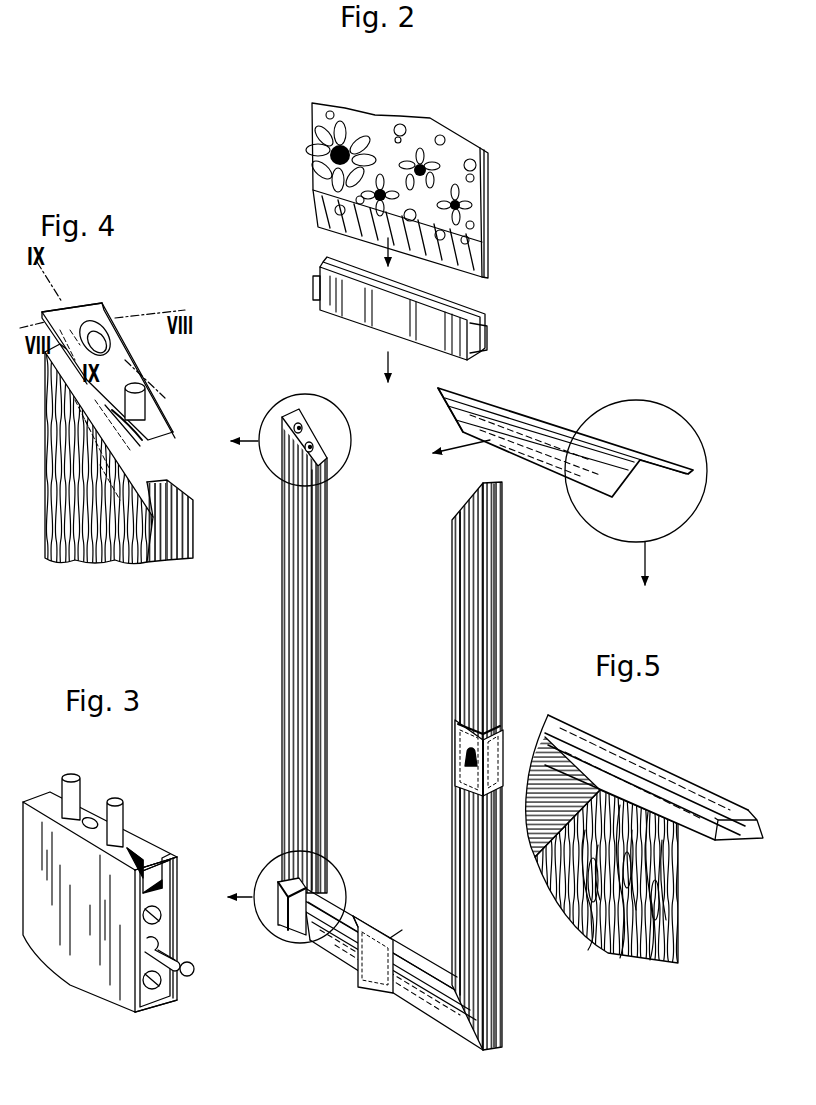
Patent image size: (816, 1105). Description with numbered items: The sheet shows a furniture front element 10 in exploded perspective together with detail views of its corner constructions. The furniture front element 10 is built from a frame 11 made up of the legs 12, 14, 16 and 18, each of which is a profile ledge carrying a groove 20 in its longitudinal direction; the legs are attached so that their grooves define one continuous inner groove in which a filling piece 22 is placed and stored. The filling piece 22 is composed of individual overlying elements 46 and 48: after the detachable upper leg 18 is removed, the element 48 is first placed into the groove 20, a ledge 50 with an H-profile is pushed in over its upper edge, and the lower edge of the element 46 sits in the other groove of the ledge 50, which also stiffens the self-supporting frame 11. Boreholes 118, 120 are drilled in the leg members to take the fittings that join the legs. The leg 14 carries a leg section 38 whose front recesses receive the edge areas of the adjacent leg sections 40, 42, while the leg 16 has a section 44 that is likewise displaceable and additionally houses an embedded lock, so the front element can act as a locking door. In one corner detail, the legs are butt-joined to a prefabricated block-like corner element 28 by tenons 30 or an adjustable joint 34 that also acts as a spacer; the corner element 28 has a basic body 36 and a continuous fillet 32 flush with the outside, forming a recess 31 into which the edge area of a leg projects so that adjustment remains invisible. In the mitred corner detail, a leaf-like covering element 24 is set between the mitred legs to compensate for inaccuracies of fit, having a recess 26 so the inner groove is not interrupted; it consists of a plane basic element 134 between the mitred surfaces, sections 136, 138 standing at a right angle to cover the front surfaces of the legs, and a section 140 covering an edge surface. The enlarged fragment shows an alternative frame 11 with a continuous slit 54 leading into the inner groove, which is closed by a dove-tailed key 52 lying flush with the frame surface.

In FIG. 2, the furniture front element 10 is at (513, 1047).
In FIG. 2, the frame 11 is at (504, 1010).
In FIG. 2, the leg 12 is at (290, 658).
In FIG. 2, the leg 14 is at (420, 1018).
In FIG. 2, the leg 16 is at (501, 967).
In FIG. 5, the leg 16 is at (660, 923).
In FIG. 2, the upper leg 18 is at (556, 440).
In FIG. 5, the upper leg 18 is at (556, 787).
In FIG. 2, the groove 20 is at (318, 770).
In FIG. 2, the filling piece 22 is at (512, 202).
In FIG. 4, the leaf-like covering element 24 is at (110, 312).
In FIG. 4, the recess 26 is at (153, 440).
In FIG. 4, the corner element 28 is at (165, 493).
In FIG. 3, the corner element 28 is at (78, 962).
In FIG. 3, the tenons 30 is at (65, 776).
In FIG. 3, the recess 31 is at (85, 812).
In FIG. 3, the fillet 32 is at (151, 838).
In FIG. 3, the adjustable joint 34 is at (186, 976).
In FIG. 3, the basic body 36 is at (162, 902).
In FIG. 2, the leg section 38 is at (373, 970).
In FIG. 2, the leg section 40 is at (412, 993).
In FIG. 2, the leg section 42 is at (338, 947).
In FIG. 2, the section 44 is at (462, 748).
In FIG. 2, the element 46 is at (470, 190).
In FIG. 2, the element 48 is at (490, 262).
In FIG. 2, the ledge 50 is at (460, 337).
In FIG. 5, the key 52 is at (737, 836).
In FIG. 2, the slit 54 is at (462, 392).
In FIG. 2, the borehole 118 is at (302, 425).
In FIG. 2, the borehole 120 is at (313, 445).
In FIG. 4, the plane basic element 134 is at (112, 350).
In FIG. 4, the section 136 is at (112, 372).
In FIG. 4, the section 138 is at (122, 425).
In FIG. 4, the section 140 is at (88, 305).